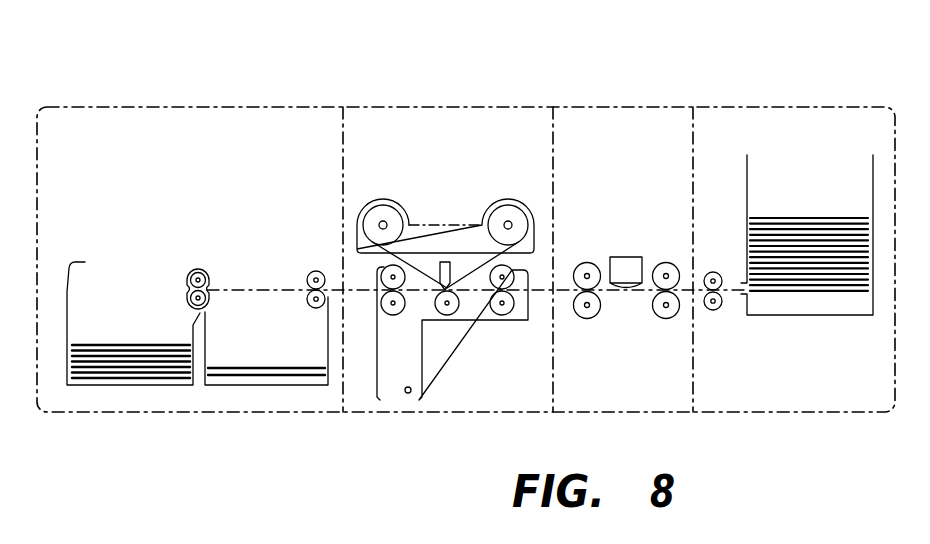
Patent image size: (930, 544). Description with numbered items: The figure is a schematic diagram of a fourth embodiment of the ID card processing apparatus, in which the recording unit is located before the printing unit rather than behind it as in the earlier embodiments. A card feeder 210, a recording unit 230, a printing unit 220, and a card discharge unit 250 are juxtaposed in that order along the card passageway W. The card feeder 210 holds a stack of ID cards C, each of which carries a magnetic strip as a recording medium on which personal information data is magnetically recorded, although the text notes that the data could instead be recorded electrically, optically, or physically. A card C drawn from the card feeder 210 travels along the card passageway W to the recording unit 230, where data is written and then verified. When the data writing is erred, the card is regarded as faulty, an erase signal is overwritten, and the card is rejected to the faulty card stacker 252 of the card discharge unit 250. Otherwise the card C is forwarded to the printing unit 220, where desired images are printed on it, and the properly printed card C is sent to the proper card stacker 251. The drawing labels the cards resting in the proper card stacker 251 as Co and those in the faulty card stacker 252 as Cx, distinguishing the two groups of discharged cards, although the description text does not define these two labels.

The card feeder 210 is at (815, 158).
The printing unit 220 is at (450, 157).
The recording unit 230 is at (633, 160).
The card discharge unit 250 is at (173, 160).
The proper card stacker 251 is at (93, 385).
The faulty card stacker 252 is at (288, 387).
The stack of original sheets Co is at (140, 374).
The remaining sheets in second tray Cx is at (248, 383).
The card passageway W is at (267, 290).
The ID card C is at (812, 287).